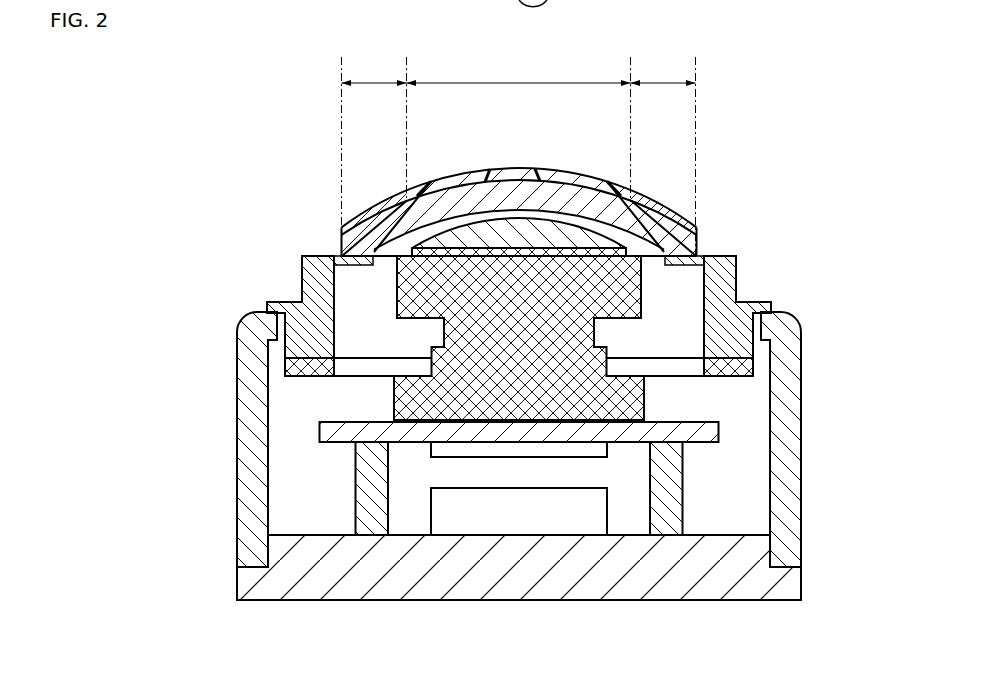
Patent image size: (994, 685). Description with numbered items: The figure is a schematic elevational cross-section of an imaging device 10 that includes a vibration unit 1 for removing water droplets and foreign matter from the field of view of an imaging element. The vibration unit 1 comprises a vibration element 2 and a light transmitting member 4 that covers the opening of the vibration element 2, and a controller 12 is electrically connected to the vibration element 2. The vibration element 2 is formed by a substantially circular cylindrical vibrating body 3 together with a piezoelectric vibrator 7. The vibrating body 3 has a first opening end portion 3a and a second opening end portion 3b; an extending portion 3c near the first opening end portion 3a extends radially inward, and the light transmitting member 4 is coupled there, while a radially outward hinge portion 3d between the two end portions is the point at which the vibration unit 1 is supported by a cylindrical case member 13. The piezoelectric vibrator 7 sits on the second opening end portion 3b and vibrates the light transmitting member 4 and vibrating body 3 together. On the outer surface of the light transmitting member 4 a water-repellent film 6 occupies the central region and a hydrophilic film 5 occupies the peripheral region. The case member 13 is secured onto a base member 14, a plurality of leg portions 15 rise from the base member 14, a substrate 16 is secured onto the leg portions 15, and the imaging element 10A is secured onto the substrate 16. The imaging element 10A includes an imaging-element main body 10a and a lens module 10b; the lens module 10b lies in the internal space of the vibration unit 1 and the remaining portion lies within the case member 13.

The imaging device 10 is at (314, 134).
The vibration unit 1 is at (314, 251).
The vibration element 2 is at (298, 280).
The vibrating body 3 is at (286, 350).
The first opening end portion 3a is at (700, 256).
The second opening end portion 3b is at (733, 368).
The extending portion 3c is at (335, 268).
The hinge portion 3d is at (766, 304).
The light transmitting member 4 is at (527, 175).
The hydrophilic film 5 is at (378, 203).
The water-repellent film 6 is at (430, 190).
The piezoelectric vibrator 7 is at (307, 377).
The imaging-element main body 10a is at (643, 288).
The imaging element 10A is at (647, 302).
The lens module 10b is at (572, 187).
The controller 12 is at (432, 510).
The case member 13 is at (801, 497).
The base member 14 is at (536, 600).
The leg portions 15 is at (683, 484).
The substrate 16 is at (331, 442).